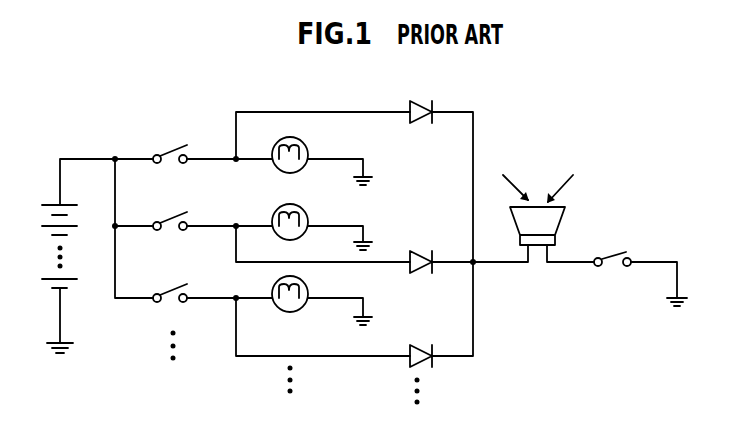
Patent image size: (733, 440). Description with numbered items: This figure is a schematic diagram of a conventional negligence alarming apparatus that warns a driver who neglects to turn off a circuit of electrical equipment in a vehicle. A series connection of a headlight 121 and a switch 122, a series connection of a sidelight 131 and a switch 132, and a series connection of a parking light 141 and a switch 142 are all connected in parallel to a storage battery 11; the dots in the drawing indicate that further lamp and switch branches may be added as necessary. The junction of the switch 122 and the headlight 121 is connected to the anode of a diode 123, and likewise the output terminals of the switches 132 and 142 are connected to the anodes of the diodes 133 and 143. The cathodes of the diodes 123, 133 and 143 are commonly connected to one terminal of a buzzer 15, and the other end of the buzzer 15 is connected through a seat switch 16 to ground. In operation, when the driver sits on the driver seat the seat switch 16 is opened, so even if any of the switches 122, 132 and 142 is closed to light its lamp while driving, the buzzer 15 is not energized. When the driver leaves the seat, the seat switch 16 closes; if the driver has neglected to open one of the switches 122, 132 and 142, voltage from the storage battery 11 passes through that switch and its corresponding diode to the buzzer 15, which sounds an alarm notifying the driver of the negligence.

The storage battery 11 is at (50, 203).
The switch 122 is at (167, 148).
The switch 132 is at (166, 218).
The switch 142 is at (168, 289).
The headlight 121 is at (306, 145).
The sidelight 131 is at (306, 212).
The parking light 141 is at (292, 301).
The diode 123 is at (420, 100).
The diode 133 is at (420, 249).
The diode 143 is at (418, 344).
The buzzer 15 is at (555, 220).
The seat switch 16 is at (615, 250).